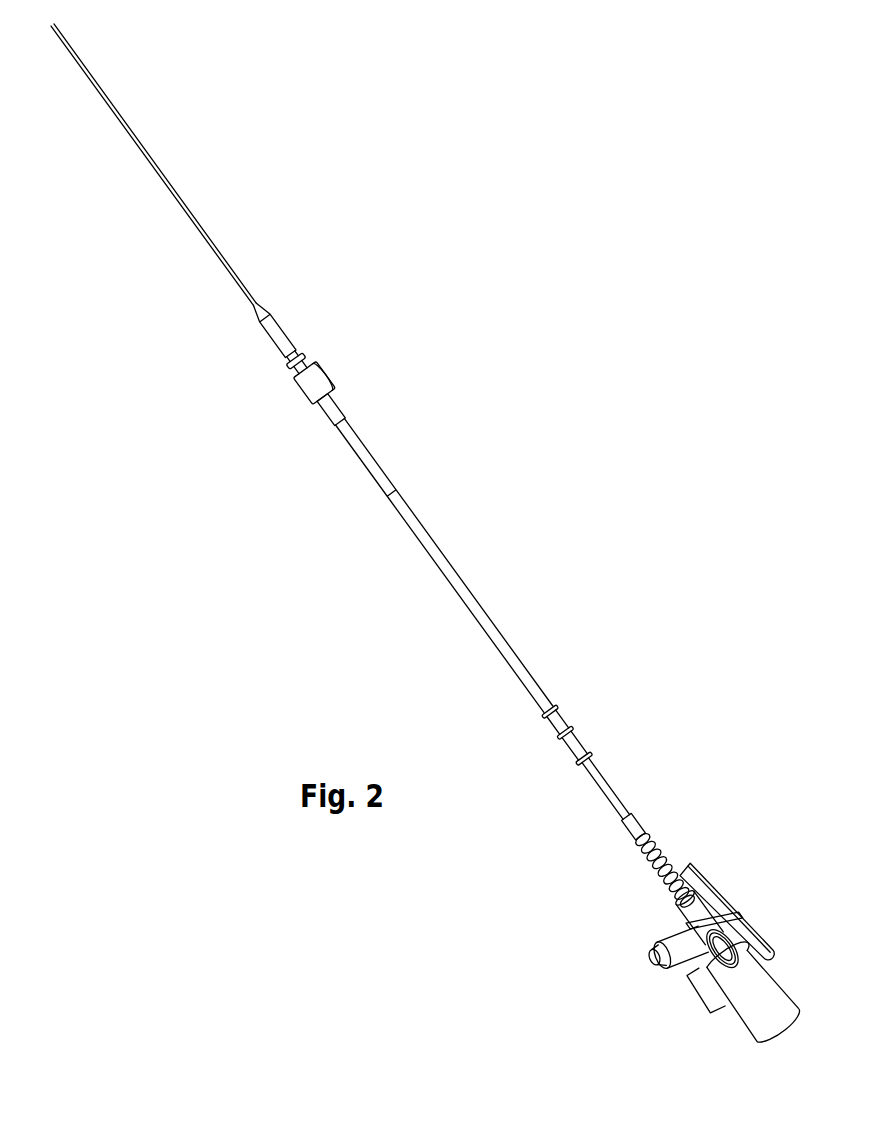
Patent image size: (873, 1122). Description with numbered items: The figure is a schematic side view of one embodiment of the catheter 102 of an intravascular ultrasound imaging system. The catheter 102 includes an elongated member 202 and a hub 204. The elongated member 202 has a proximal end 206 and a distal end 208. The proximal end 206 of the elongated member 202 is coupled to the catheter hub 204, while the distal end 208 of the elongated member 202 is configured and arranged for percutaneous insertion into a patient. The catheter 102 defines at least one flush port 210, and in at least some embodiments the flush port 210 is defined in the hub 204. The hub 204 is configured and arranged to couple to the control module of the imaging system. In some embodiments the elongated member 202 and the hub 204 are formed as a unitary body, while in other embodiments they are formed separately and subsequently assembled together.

The catheter 102 is at (483, 272).
The elongated member 202 is at (187, 493).
The hub 204 is at (784, 818).
The proximal end 206 is at (557, 864).
The distal end 208 is at (39, 80).
The flush port 210 is at (661, 963).